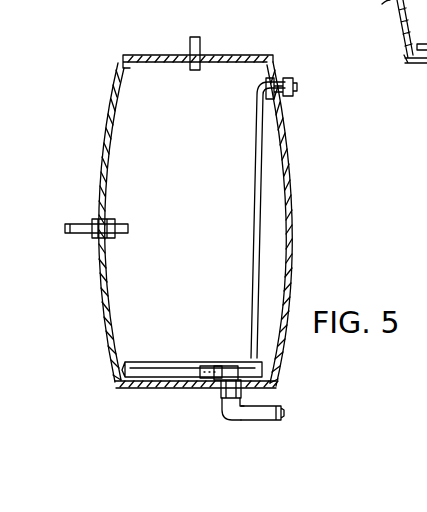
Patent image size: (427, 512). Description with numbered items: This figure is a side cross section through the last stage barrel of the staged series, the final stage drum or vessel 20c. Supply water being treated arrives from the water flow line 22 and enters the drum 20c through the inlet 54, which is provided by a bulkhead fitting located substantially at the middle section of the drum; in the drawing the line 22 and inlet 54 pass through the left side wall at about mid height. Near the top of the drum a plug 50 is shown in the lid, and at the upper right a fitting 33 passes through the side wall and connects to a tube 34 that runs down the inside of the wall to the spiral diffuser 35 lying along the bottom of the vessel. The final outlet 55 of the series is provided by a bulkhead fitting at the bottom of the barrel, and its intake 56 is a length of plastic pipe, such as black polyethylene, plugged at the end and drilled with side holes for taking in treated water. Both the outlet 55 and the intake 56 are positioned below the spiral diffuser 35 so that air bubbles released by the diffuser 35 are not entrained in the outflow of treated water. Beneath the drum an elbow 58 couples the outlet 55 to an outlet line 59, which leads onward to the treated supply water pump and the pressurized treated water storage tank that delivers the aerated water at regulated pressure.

The final stage drum 20c is at (112, 91).
The water flow line 22 is at (77, 220).
The fitting 33 is at (282, 82).
The tube 34 is at (263, 217).
The spiral diffuser 35 is at (195, 360).
The plug 50 is at (200, 50).
The inlet 54 is at (90, 238).
The final outlet 55 is at (222, 385).
The intake 56 is at (196, 372).
The elbow 58 is at (247, 423).
The outlet line 59 is at (272, 415).